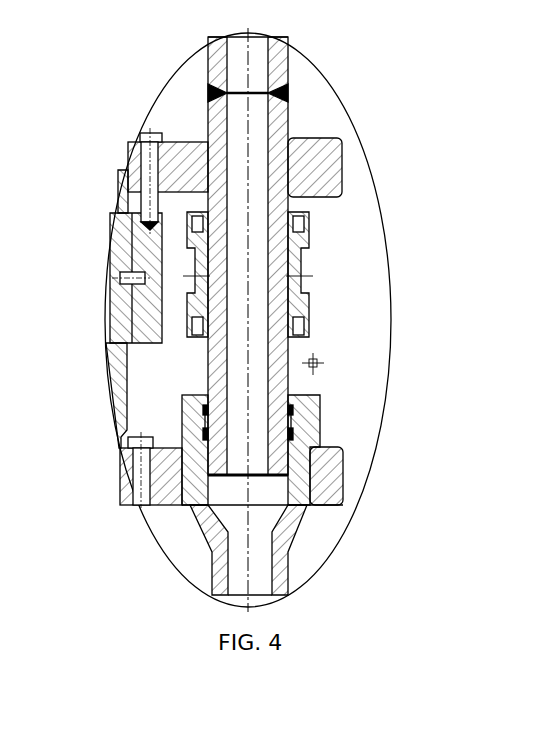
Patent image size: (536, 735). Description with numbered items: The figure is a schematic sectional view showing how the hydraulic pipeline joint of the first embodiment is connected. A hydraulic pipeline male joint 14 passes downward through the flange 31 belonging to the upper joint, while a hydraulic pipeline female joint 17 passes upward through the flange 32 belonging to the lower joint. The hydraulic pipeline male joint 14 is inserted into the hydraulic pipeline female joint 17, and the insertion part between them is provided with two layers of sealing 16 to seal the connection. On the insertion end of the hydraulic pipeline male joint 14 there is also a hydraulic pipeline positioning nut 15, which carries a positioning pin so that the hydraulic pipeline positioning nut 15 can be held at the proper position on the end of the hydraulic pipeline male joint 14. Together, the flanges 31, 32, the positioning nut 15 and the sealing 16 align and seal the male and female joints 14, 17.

The hydraulic pipeline male joint 14 is at (266, 40).
The flange 31 is at (337, 173).
The hydraulic pipeline positioning nut 15 is at (292, 258).
The sealing 16 is at (295, 417).
The flange 32 is at (343, 477).
The hydraulic pipeline female joint 17 is at (312, 488).